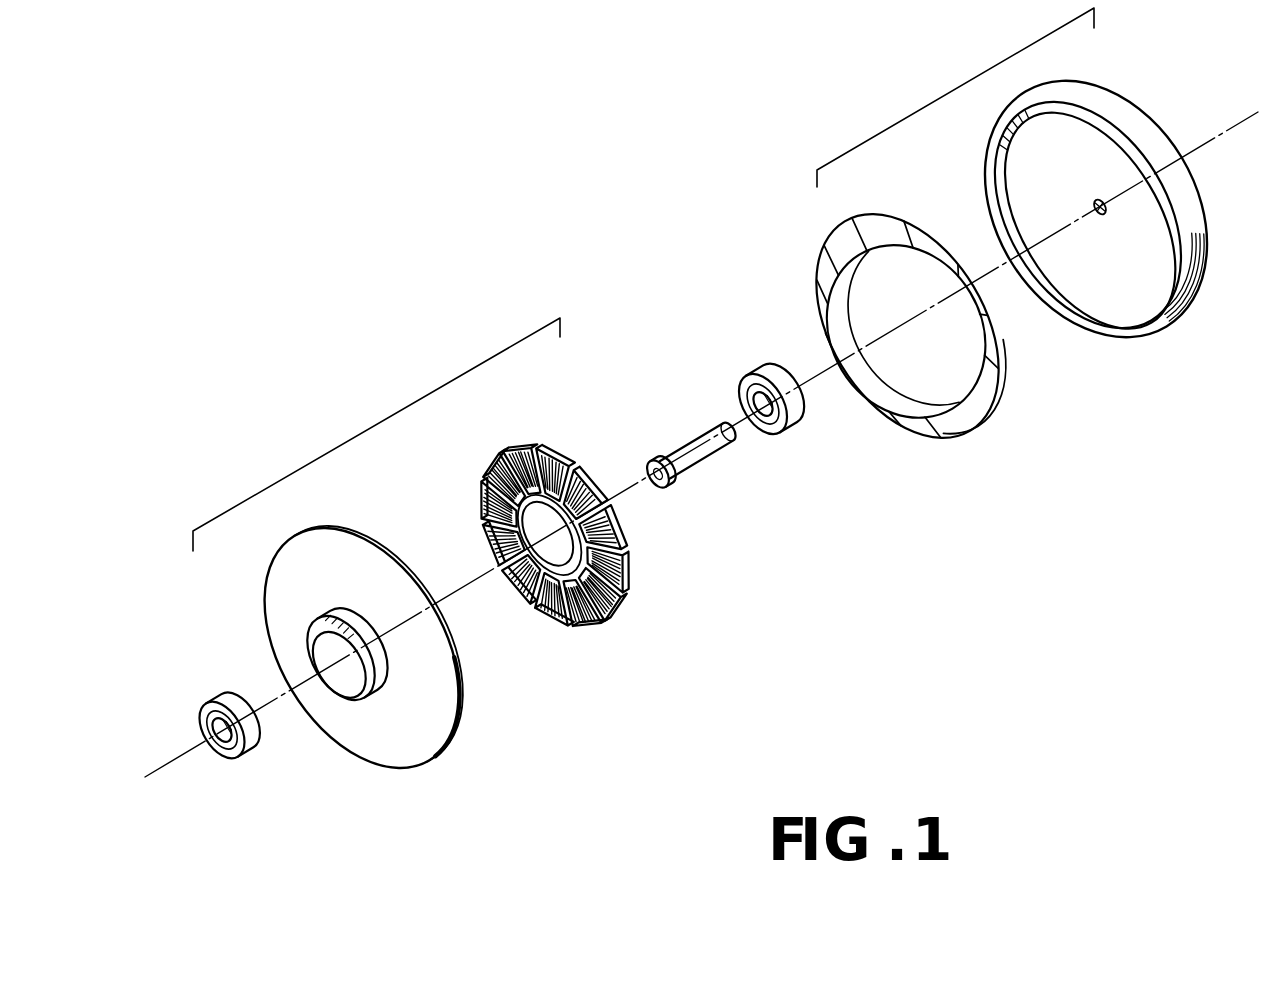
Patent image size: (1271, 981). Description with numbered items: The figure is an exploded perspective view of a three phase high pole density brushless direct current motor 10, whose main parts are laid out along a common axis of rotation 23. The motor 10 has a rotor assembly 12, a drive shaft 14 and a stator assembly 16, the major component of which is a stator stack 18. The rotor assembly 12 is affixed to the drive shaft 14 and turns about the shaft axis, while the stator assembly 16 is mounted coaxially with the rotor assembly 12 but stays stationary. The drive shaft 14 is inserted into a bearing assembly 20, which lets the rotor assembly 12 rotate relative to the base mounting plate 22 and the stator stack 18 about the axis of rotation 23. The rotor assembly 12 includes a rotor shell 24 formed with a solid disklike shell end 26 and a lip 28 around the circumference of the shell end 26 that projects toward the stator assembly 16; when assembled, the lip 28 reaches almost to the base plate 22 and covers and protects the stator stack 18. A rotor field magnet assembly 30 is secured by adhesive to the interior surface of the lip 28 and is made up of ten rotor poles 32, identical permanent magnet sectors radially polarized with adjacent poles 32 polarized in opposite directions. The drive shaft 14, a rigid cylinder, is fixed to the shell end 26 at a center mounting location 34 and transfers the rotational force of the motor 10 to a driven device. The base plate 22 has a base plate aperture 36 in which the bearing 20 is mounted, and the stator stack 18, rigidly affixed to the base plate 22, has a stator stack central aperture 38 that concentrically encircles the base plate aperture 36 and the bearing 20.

The high pole density brushless DC motor 10 is at (1004, 553).
The rotor assembly 12 is at (968, 90).
The drive shaft 14 is at (684, 453).
The stator assembly 16 is at (385, 419).
The stator stack 18 is at (513, 450).
The bearing assembly 20 is at (220, 701).
The base mounting plate 22 is at (351, 596).
The axis of rotation 23 is at (1194, 151).
The rotor shell 24 is at (1118, 293).
The rotor shell end 26 is at (1081, 168).
The lip 28 is at (1012, 196).
The rotor field magnet assembly 30 is at (816, 316).
The rotor poles 32 is at (918, 412).
The center mounting location 34 is at (1108, 213).
The base plate aperture 36 is at (348, 697).
The stator stack central aperture 38 is at (531, 600).